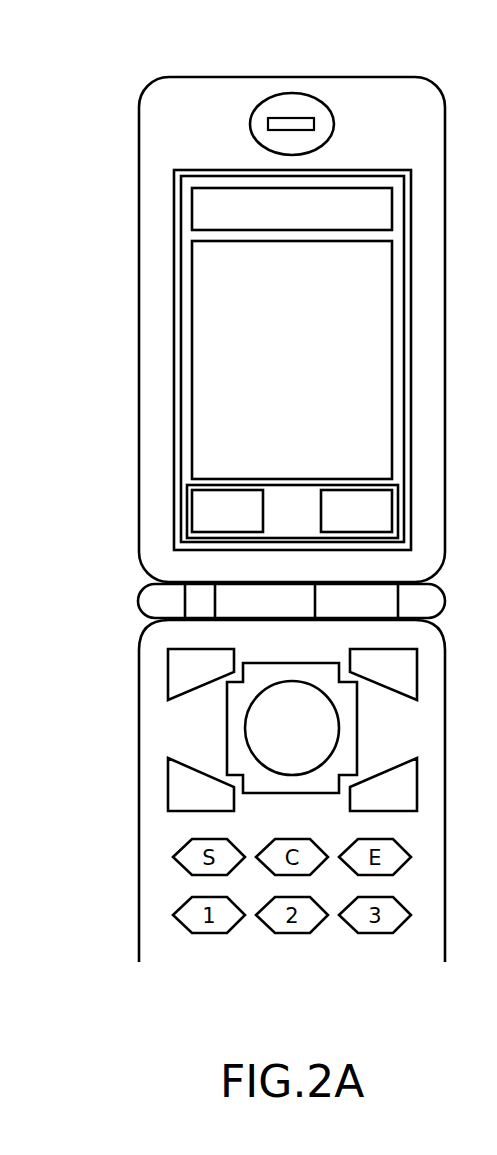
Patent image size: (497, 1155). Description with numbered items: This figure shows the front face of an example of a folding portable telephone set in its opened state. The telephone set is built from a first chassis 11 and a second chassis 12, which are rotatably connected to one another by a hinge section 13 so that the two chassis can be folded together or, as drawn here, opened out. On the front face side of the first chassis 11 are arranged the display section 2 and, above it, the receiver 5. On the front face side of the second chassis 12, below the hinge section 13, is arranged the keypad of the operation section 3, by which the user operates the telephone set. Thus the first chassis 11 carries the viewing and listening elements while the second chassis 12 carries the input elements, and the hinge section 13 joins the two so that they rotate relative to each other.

The first chassis 11 is at (139, 151).
The receiver 5 is at (317, 102).
The display section 2 is at (210, 293).
The hinge section 13 is at (138, 608).
The second chassis 12 is at (139, 697).
The operation section 3 is at (232, 741).